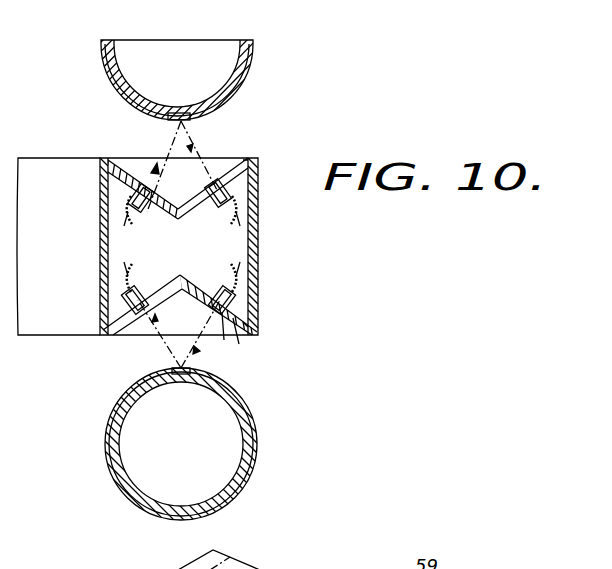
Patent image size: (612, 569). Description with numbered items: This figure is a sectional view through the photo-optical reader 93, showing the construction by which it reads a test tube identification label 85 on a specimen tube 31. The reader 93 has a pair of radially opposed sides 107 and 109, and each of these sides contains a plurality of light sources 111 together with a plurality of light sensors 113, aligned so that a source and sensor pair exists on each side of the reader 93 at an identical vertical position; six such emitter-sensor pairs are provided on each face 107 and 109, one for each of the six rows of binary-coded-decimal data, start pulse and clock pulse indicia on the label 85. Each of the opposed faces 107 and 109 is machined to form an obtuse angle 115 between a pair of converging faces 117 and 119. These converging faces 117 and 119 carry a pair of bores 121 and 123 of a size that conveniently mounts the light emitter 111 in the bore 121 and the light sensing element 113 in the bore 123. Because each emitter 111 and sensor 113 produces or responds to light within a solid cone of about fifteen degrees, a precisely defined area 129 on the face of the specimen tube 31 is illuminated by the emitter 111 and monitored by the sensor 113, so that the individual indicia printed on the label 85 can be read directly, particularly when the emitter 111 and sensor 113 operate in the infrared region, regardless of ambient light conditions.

The specimen tube 31 is at (240, 67).
The test tube identification label 85 is at (127, 102).
The precisely defined area 129 is at (177, 116).
The photo-optical reader 93 is at (258, 250).
The converging face 117 is at (115, 167).
The radially opposed side 107 is at (219, 150).
The converging face 119 is at (242, 161).
The radially opposed side 109 is at (238, 340).
The obtuse angle 115 is at (182, 206).
The light source 111 is at (130, 200).
The light sensor 113 is at (235, 197).
The bore 121 is at (135, 210).
The bore 123 is at (227, 182).